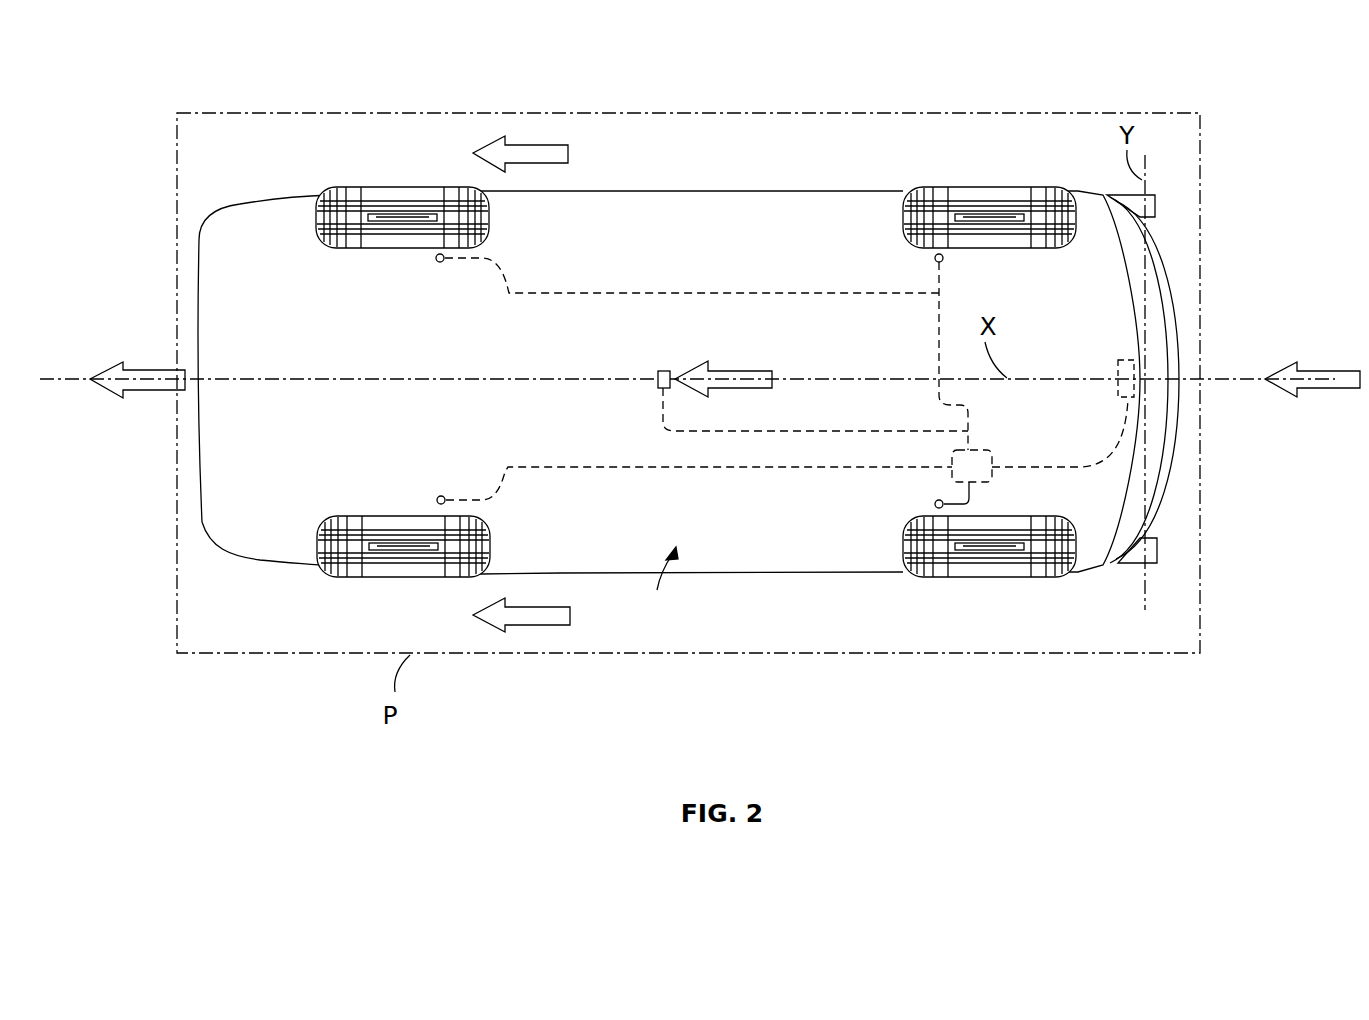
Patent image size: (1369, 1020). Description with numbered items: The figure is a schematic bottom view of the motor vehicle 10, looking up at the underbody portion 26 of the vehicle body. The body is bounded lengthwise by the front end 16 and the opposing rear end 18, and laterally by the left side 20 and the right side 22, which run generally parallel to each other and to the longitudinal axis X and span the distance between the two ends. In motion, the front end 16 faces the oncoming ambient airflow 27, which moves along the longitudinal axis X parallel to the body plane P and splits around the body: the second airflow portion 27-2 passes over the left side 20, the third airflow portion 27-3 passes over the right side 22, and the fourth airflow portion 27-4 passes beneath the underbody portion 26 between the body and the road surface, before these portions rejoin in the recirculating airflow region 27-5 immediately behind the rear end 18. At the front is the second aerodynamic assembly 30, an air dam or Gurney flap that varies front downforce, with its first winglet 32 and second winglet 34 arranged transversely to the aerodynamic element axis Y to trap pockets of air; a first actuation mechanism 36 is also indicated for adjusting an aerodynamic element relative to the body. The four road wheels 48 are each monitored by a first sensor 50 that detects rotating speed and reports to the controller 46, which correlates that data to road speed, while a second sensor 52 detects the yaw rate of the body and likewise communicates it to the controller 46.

The motor vehicle 10 is at (692, 401).
The front end 16 is at (1180, 400).
The rear end 18 is at (196, 343).
The left side 20 is at (770, 573).
The right side 22 is at (742, 191).
The underbody portion 26 is at (770, 482).
The ambient airflow 27 is at (1323, 378).
The second airflow portion 27-2 is at (540, 626).
The third airflow portion 27-3 is at (520, 150).
The fourth airflow portion 27-4 is at (737, 371).
The recirculating airflow region 27-5 is at (152, 391).
The second aerodynamic assembly 30 is at (1170, 350).
The first winglet 32 is at (1128, 196).
The second winglet 34 is at (1130, 565).
The first actuation mechanism 36 is at (1118, 386).
The controller 46 is at (985, 487).
The road wheels 48 is at (385, 187).
The first sensors 50 is at (440, 264).
The second sensors 52 is at (660, 390).